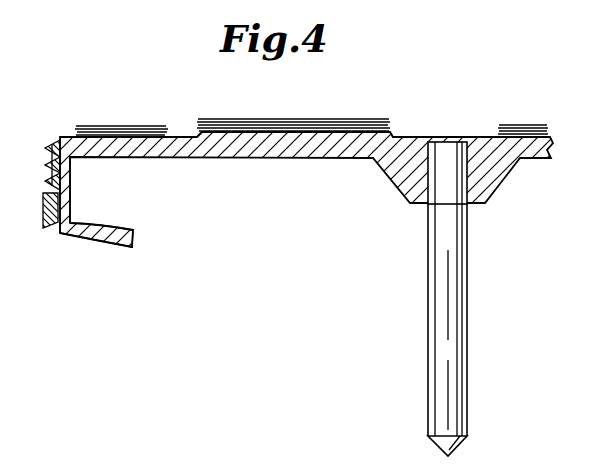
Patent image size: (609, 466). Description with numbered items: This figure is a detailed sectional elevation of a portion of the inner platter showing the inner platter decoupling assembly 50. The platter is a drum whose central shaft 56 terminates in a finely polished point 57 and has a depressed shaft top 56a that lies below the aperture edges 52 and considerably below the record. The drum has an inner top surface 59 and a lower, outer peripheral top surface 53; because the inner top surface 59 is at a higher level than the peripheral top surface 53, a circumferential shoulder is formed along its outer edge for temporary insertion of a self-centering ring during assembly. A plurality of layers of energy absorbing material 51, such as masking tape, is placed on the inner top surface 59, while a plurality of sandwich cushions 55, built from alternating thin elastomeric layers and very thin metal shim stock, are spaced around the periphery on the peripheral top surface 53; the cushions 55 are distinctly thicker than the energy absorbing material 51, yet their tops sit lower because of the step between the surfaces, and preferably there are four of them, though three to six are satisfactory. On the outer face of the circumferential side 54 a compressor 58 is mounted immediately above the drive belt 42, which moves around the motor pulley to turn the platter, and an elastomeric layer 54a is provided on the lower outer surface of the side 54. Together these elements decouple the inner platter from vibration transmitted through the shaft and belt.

The belt 42 is at (43, 215).
The inner platter decoupling assembly 50 is at (332, 121).
The energy absorbing material 51 is at (238, 120).
The aperture edges 52 is at (488, 140).
The peripheral top surface 53 is at (65, 137).
The circumferential side 54 is at (70, 200).
The elastomeric layer 54a is at (93, 248).
The sandwich cushion 55 is at (128, 126).
The shaft 56 is at (430, 288).
The depressed shaft top 56a is at (448, 142).
The finely polished point 57 is at (441, 444).
The compressor 58 is at (43, 143).
The inner top surface 59 is at (193, 133).